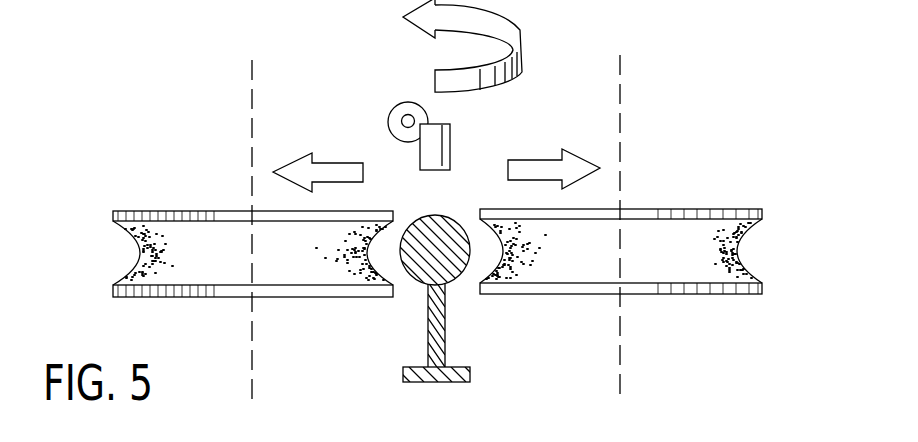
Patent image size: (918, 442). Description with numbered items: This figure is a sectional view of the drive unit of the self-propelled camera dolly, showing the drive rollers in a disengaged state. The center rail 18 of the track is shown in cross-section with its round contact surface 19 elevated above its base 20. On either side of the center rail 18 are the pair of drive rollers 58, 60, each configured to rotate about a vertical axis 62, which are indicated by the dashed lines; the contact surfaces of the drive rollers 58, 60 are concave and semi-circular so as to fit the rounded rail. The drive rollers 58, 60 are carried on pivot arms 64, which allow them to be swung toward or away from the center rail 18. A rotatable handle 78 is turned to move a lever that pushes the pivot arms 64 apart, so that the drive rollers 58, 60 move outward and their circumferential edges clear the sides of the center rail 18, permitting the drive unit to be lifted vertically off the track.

The center rail 18 is at (465, 327).
The round contact surface 19 is at (451, 215).
The base 20 is at (452, 382).
The drive roller 58 is at (696, 208).
The drive roller 60 is at (211, 211).
The vertical axis 62 is at (254, 127).
The pivot arm 64 is at (140, 257).
The rotatable handle 78 is at (423, 122).